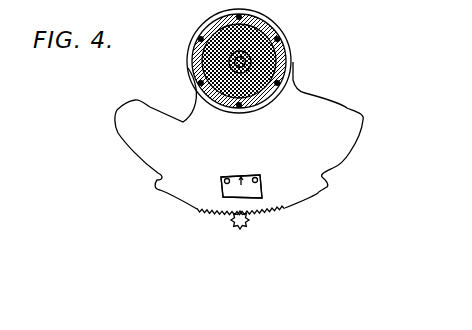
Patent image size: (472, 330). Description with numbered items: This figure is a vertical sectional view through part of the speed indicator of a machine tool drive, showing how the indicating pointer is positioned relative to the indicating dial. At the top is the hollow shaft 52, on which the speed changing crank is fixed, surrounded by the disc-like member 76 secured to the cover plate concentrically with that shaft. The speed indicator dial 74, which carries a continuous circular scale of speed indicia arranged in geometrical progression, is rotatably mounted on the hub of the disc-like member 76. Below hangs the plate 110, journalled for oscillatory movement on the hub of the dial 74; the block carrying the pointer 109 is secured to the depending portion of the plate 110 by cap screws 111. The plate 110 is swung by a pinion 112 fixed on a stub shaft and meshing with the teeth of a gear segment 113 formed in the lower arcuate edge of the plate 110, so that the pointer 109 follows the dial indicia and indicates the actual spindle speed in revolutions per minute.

The hollow shaft 52 is at (229, 65).
The speed indicator dial 74 is at (291, 58).
The disc-like member 76 is at (277, 30).
The pointer 109 is at (249, 177).
The plate 110 is at (305, 97).
The cap screws 111 is at (262, 184).
The pinion 112 is at (232, 222).
The gear segment 113 is at (265, 214).